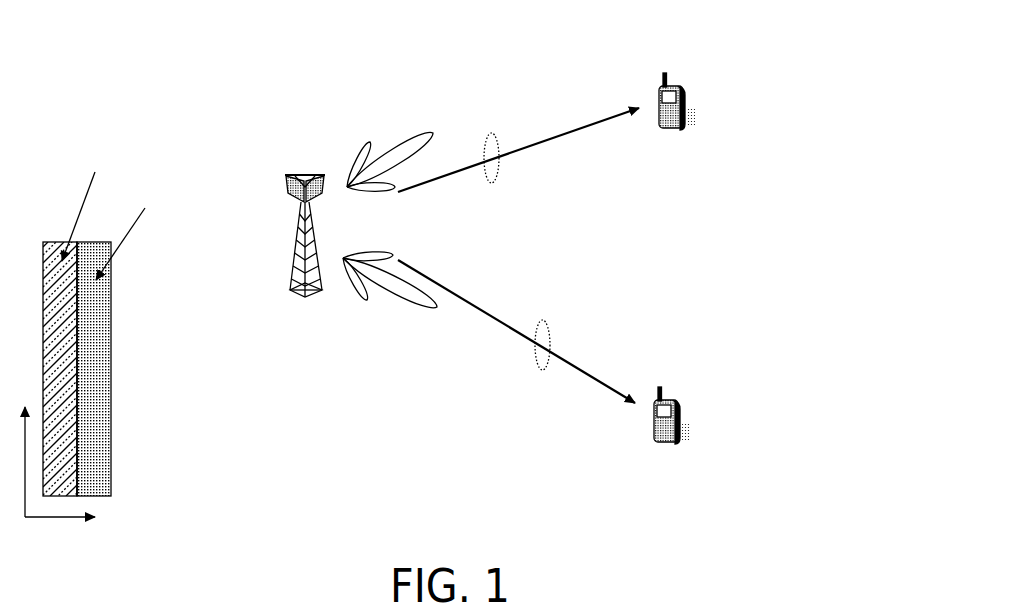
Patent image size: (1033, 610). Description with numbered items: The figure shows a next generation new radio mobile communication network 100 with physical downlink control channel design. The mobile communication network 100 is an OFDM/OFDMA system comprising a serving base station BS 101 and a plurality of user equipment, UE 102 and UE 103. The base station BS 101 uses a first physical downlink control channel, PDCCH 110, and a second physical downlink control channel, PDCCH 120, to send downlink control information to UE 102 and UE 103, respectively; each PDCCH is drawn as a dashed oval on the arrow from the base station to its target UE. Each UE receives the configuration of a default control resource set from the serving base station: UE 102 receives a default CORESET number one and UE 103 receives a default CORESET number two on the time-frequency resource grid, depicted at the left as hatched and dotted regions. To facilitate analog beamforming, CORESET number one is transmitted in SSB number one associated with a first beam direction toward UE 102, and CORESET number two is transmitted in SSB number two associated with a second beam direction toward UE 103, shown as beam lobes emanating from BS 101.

The mobile communication network 100 is at (790, 46).
The base station 101 is at (305, 175).
The user equipment 102 is at (683, 117).
The user equipment 103 is at (680, 430).
The physical downlink control channel 110 is at (491, 133).
The physical downlink control channel 120 is at (542, 320).